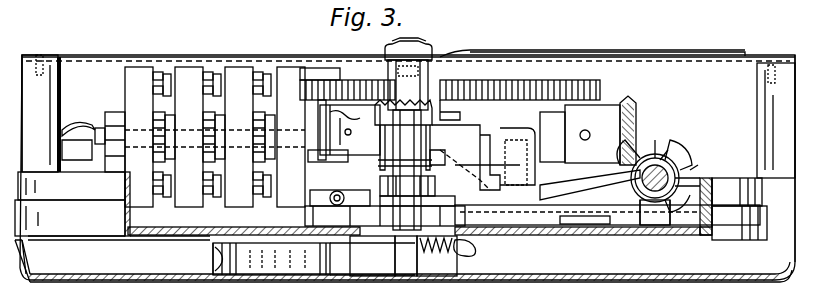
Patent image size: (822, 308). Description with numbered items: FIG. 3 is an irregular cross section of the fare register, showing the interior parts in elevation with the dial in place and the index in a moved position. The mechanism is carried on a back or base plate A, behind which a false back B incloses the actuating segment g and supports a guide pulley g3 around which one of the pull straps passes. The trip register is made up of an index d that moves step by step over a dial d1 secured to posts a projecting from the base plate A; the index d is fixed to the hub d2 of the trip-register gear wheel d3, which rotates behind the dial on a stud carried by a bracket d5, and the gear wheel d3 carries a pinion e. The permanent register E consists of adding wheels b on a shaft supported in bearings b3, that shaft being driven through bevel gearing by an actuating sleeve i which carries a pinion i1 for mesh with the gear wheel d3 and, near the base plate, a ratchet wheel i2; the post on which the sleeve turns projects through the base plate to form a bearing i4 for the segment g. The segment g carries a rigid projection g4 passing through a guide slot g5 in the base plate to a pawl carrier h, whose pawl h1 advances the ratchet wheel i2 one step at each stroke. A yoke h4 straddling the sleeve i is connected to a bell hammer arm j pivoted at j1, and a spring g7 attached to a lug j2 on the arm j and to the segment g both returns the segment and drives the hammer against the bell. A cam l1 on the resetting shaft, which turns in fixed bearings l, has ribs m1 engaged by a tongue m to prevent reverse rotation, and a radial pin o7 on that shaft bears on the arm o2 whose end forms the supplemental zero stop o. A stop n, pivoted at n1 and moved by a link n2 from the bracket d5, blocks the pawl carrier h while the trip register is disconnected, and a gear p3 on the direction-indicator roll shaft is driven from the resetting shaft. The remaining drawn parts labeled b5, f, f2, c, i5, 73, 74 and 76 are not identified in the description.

The back or base plate A is at (168, 228).
The false back B is at (616, 282).
The posts a is at (55, 90).
The adding wheels b is at (288, 67).
The bearings b3 is at (110, 112).
The pinion b5 is at (350, 130).
The permanent register E is at (202, 139).
The lever f is at (88, 156).
The lever arm f2 is at (83, 133).
The index or pointer d is at (673, 50).
The dial d1 is at (112, 57).
The hub d2 is at (440, 75).
The trip-register gear wheel d3 is at (582, 86).
The bracket d5 is at (487, 152).
The supplemental zero stop o is at (408, 80).
The zero stop arm o2 is at (590, 185).
The radial pin o7 is at (682, 148).
The actuating sleeve i is at (403, 165).
The pinion i1 is at (372, 68).
The ratchet wheel i2 is at (407, 189).
The bearing i4 is at (405, 162).
The pin i5 is at (437, 153).
The pawl 73 is at (327, 128).
The spring 74 is at (346, 108).
The ratchet 76 is at (700, 162).
The pawl carrier h is at (385, 216).
The pawl h1 is at (340, 197).
The yoke h4 is at (328, 165).
The actuating segment g is at (355, 272).
The guide pulley g3 is at (236, 280).
The rigid projection g4 is at (372, 256).
The guide slot g5 is at (417, 208).
The spring g7 is at (442, 272).
The bracket c is at (458, 108).
The pinion e is at (466, 150).
The bell hammer arm j is at (465, 170).
The pivot pin j1 is at (515, 132).
The lug j2 is at (478, 246).
The gear p3 is at (636, 106).
The tongue m is at (580, 136).
The ribs m1 is at (698, 180).
The fixed bearings l is at (654, 182).
The cam l1 is at (664, 152).
The stop n is at (548, 228).
The pivot n1 is at (660, 236).
The link n2 is at (575, 228).